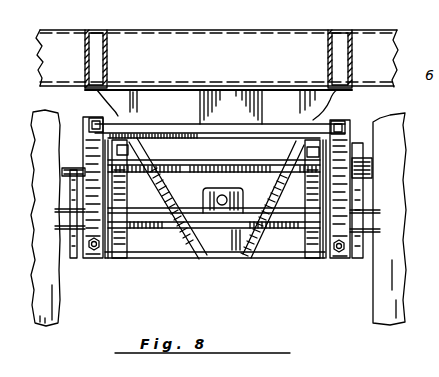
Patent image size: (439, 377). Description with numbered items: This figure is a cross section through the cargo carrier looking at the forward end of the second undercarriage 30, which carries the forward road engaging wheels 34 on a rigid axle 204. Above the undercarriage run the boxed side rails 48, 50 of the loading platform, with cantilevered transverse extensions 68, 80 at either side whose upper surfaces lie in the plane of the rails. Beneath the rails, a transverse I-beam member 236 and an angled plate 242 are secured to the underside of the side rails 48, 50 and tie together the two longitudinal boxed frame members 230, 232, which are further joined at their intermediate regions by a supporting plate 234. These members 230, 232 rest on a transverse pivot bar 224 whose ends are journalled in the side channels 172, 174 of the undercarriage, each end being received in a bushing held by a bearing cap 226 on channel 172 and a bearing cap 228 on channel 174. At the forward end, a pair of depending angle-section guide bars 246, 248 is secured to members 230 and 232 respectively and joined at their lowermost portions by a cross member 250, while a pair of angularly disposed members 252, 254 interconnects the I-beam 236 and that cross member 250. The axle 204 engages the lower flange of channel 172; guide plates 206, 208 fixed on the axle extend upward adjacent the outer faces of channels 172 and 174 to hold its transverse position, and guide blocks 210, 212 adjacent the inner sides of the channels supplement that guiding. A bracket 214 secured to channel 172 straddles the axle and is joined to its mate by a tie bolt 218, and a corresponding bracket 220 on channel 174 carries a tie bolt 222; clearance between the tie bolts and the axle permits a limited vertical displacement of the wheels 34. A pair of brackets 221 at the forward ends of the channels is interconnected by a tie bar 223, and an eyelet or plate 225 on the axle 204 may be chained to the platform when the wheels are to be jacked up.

The second undercarriage 30 is at (343, 118).
The road engaging wheels 34 is at (55, 327).
The side rail 48 is at (85, 40).
The side rail 50 is at (352, 45).
The transverse extension 68 is at (72, 66).
The transverse extension 80 is at (389, 62).
The side channel 172 is at (97, 150).
The side channel 174 is at (350, 130).
The rigid axle 204 is at (207, 258).
The guide plate 206 is at (76, 255).
The guide plate 208 is at (360, 254).
The guide block 210 is at (140, 205).
The guide block 212 is at (305, 237).
The bracket 214 is at (100, 249).
The tie bolt 218 is at (92, 256).
The bracket 220 is at (330, 254).
The bracket 221 is at (80, 170).
The tie bolt 222 is at (339, 251).
The tie bar 223 is at (253, 127).
The pivot bar 224 is at (217, 163).
The eyelet or plate 225 is at (242, 208).
The bearing cap 226 is at (70, 162).
The bearing cap 228 is at (366, 162).
The boxed frame member 230 is at (122, 148).
The boxed frame member 232 is at (300, 143).
The supporting plate 234 is at (200, 135).
The I-beam member 236 is at (180, 96).
The plate 242 is at (97, 77).
The guide bar 246 is at (150, 162).
The guide bar 248 is at (290, 175).
The cross member 250 is at (235, 248).
The angularly disposed member 252 is at (170, 186).
The angularly disposed member 254 is at (272, 196).